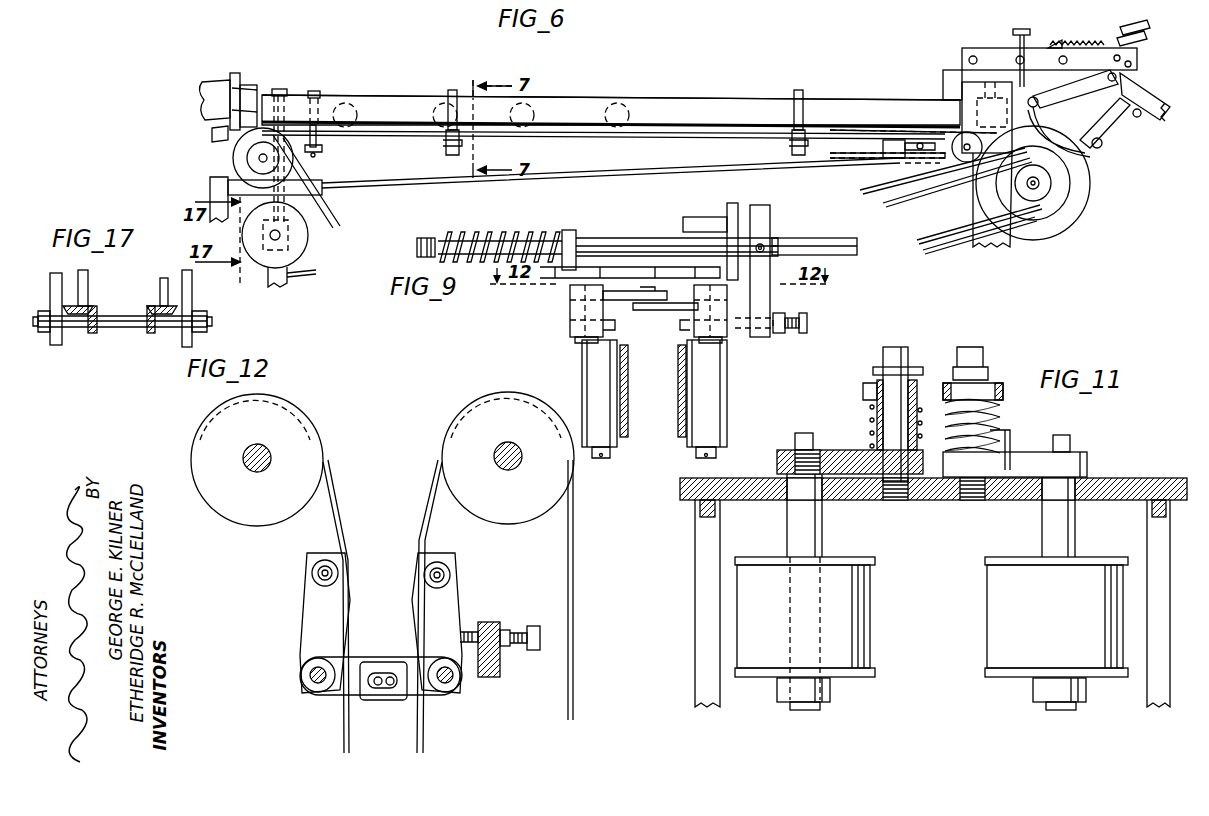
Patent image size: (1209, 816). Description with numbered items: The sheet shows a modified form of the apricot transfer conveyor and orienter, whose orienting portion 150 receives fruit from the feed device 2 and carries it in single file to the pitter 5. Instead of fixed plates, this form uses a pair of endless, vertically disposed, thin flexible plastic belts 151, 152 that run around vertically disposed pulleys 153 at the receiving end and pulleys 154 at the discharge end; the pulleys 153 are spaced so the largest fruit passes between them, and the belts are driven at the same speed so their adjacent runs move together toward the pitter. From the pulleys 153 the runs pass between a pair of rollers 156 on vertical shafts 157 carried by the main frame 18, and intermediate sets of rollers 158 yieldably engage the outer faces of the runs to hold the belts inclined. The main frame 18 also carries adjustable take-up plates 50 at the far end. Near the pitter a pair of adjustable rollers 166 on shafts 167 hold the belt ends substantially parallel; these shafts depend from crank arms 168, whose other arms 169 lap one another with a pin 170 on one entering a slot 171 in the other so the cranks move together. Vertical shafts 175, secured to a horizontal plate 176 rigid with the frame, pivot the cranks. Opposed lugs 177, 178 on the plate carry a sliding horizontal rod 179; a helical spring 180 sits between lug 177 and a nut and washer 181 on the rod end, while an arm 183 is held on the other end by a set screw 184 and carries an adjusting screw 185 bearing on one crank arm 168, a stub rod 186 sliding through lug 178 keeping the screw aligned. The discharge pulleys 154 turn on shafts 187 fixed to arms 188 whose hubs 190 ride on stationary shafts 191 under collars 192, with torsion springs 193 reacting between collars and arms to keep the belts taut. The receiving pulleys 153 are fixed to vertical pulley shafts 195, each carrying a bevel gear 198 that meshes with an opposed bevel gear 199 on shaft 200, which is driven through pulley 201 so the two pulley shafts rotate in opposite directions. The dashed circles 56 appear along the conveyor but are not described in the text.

In FIG. 6, the feed device 2 is at (199, 83).
In FIG. 6, the pitter 5 is at (1103, 148).
In FIG. 6, the main frame 18 is at (287, 283).
In FIG. 11, the main frame 18 is at (1140, 479).
In FIG. 17, the main frame 18 is at (57, 346).
In FIG. 6, the adjustable take-up plates 50 is at (940, 140).
In FIG. 6, the guide holes 56 is at (540, 117).
In FIG. 6, the orienting portion 150 is at (715, 97).
In FIG. 6, the belt 151 is at (692, 110).
In FIG. 9, the belt 151 is at (678, 427).
In FIG. 12, the belt 151 is at (420, 506).
In FIG. 11, the belt 151 is at (770, 609).
In FIG. 9, the belt 152 is at (628, 420).
In FIG. 12, the belt 152 is at (338, 507).
In FIG. 11, the belt 152 is at (1057, 609).
In FIG. 6, the pulleys 153 is at (286, 90).
In FIG. 6, the pulleys 154 is at (962, 105).
In FIG. 12, the pulleys 154 is at (270, 433).
In FIG. 11, the pulleys 154 is at (1000, 560).
In FIG. 6, the rollers 156 is at (318, 92).
In FIG. 6, the vertical shafts 157 is at (325, 147).
In FIG. 6, the intermediate rollers 158 is at (452, 90).
In FIG. 9, the rollers 166 is at (705, 381).
In FIG. 12, the rollers 166 is at (412, 592).
In FIG. 9, the shafts 167 is at (700, 458).
In FIG. 12, the shafts 167 is at (326, 560).
In FIG. 9, the crank arms 168 is at (685, 325).
In FIG. 12, the crank arms 168 is at (428, 614).
In FIG. 9, the arms 169 is at (690, 312).
In FIG. 12, the arms 169 is at (412, 660).
In FIG. 12, the pin 170 is at (380, 690).
In FIG. 12, the slot 171 is at (392, 686).
In FIG. 9, the vertical shafts 175 is at (578, 345).
In FIG. 12, the vertical shafts 175 is at (305, 676).
In FIG. 9, the horizontal plate 176 is at (626, 266).
In FIG. 9, the lug 177 is at (571, 228).
In FIG. 9, the lug 178 is at (734, 205).
In FIG. 9, the horizontal rod 179 is at (824, 243).
In FIG. 9, the helical spring 180 is at (494, 230).
In FIG. 9, the nut and washer 181 is at (430, 229).
In FIG. 9, the arm 183 is at (765, 300).
In FIG. 12, the arm 183 is at (487, 621).
In FIG. 9, the set screw 184 is at (764, 246).
In FIG. 9, the adjusting screw 185 is at (790, 332).
In FIG. 12, the adjusting screw 185 is at (520, 628).
In FIG. 9, the stub rod 186 is at (688, 222).
In FIG. 12, the shafts 187 is at (260, 472).
In FIG. 11, the shafts 187 is at (803, 433).
In FIG. 11, the arms 188 is at (780, 460).
In FIG. 11, the hubs 190 is at (868, 405).
In FIG. 11, the stationary shafts 191 is at (890, 347).
In FIG. 11, the collar 192 is at (918, 380).
In FIG. 11, the torsion springs 193 is at (868, 422).
In FIG. 6, the vertical pulley shafts 195 is at (282, 90).
In FIG. 17, the vertical pulley shafts 195 is at (163, 282).
In FIG. 6, the bevel gear 198 is at (312, 236).
In FIG. 17, the bevel gear 198 is at (152, 305).
In FIG. 6, the bevel gear 199 is at (305, 250).
In FIG. 17, the bevel gear 199 is at (150, 333).
In FIG. 6, the shaft 200 is at (272, 241).
In FIG. 17, the shaft 200 is at (212, 320).
In FIG. 6, the pulley 201 is at (294, 211).